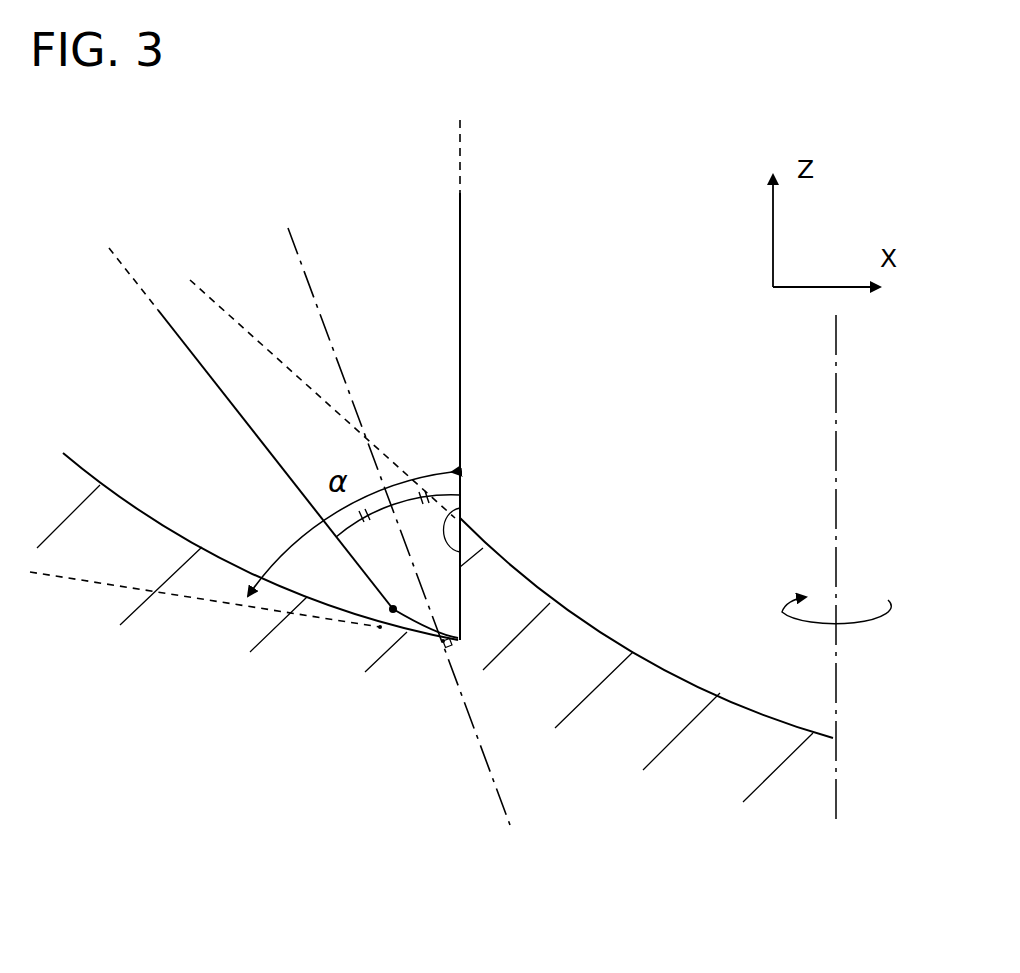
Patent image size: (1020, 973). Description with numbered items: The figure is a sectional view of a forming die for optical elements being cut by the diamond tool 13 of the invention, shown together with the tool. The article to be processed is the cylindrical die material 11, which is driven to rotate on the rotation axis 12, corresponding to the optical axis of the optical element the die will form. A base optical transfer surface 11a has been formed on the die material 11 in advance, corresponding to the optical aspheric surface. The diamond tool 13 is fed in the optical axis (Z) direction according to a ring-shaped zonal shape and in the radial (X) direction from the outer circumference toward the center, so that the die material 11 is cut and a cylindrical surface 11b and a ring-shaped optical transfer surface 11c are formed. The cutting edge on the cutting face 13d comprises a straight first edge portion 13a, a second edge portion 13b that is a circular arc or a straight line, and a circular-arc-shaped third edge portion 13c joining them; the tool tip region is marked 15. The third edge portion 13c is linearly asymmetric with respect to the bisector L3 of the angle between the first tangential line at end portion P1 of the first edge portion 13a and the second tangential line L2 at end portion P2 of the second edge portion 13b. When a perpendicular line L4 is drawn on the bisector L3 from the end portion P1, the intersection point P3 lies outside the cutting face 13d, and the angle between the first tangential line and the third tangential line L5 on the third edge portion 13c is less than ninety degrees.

The die material 11 is at (350, 810).
The base optical transfer surface 11a is at (663, 662).
The cylindrical surface 11b is at (460, 508).
The ring-shaped optical transfer surface 11c is at (228, 558).
The rotation axis 12 is at (837, 397).
The diamond tool 13 is at (480, 236).
The first edge portion 13a is at (462, 345).
The second edge portion 13b is at (223, 393).
The third edge portion 13c is at (413, 635).
The cutting face 13d is at (406, 277).
The cutting point 15 is at (460, 600).
The second tangential line L2 is at (138, 285).
The bisector L3 is at (343, 373).
The perpendicular line L4 is at (460, 650).
The third tangential line L5 is at (98, 595).
The end portion of the first edge portion P1 is at (443, 640).
The end portion of the second edge portion P2 is at (380, 627).
The point of intersection P3 is at (443, 647).